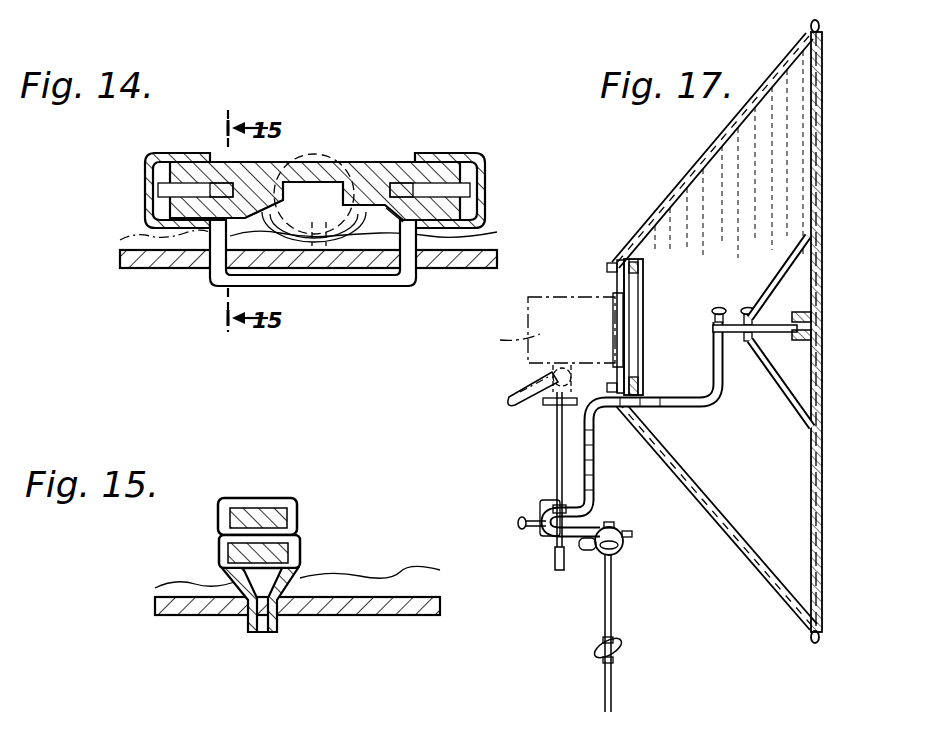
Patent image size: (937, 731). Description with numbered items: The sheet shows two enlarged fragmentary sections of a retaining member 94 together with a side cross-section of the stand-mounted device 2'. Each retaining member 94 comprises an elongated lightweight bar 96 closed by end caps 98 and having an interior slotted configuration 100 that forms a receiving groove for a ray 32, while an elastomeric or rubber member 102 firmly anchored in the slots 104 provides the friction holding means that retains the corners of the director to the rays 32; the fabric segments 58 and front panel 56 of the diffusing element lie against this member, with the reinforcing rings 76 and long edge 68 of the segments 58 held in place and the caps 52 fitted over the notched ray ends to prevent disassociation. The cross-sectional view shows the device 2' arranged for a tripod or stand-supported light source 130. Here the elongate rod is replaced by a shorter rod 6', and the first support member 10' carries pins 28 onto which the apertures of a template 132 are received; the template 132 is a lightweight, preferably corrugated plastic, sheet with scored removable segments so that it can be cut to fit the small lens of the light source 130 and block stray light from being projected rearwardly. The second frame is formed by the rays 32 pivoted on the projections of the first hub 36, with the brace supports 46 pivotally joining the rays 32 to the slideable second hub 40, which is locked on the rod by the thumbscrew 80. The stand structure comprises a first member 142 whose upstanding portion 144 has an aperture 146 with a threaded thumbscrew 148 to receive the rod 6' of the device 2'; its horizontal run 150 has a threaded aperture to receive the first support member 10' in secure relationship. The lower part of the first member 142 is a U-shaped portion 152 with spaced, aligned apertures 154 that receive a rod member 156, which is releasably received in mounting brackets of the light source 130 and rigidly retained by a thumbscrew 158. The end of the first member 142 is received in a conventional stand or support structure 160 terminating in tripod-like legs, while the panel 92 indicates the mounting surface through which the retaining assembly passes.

In FIG. 17, the device 2' is at (850, 102).
In FIG. 17, the shorter rod 6' is at (842, 311).
In FIG. 17, the first support member 10' is at (675, 273).
In FIG. 17, the pins 28 is at (612, 265).
In FIG. 14, the rays 32 is at (334, 262).
In FIG. 17, the rays 32 is at (815, 358).
In FIG. 17, the first hub 36 is at (811, 327).
In FIG. 17, the second hub 40 is at (756, 322).
In FIG. 17, the brace supports 46 is at (812, 393).
In FIG. 14, the grommets or covers 52 is at (322, 158).
In FIG. 17, the grommets or covers 52 is at (820, 28).
In FIG. 17, the front panel 56 is at (822, 452).
In FIG. 14, the conformable segments 58 is at (498, 236).
In FIG. 15, the conformable segments 58 is at (365, 582).
In FIG. 17, the conformable segments 58 is at (700, 152).
In FIG. 17, the long edge 68 is at (793, 58).
In FIG. 14, the reinforcing rings 76 is at (322, 232).
In FIG. 17, the thumbscrew 80 is at (756, 315).
In FIG. 14, the panel 92 is at (136, 269).
In FIG. 15, the panel 92 is at (210, 615).
In FIG. 14, the retaining members 94 is at (389, 158).
In FIG. 14, the bar 96 is at (410, 228).
In FIG. 15, the bar 96 is at (300, 520).
In FIG. 14, the end caps 98 is at (192, 154).
In FIG. 15, the end caps 98 is at (283, 497).
In FIG. 14, the interior slotted configuration 100 is at (212, 283).
In FIG. 14, the elastomeric or rubber member 102 is at (304, 224).
In FIG. 15, the elastomeric or rubber member 102 is at (222, 540).
In FIG. 14, the slots 104 is at (215, 190).
In FIG. 15, the slots 104 is at (262, 497).
In FIG. 17, the light source 130 is at (527, 334).
In FIG. 17, the template 132 is at (622, 282).
In FIG. 17, the first member 142 is at (600, 472).
In FIG. 17, the upstanding portion 144 is at (728, 380).
In FIG. 17, the aperture 146 is at (712, 327).
In FIG. 17, the threaded thumbscrew 148 is at (722, 306).
In FIG. 17, the horizontal run 150 is at (658, 398).
In FIG. 17, the U-shaped portion 152 is at (548, 540).
In FIG. 17, the apertures 154 is at (556, 510).
In FIG. 17, the rod member 156 is at (556, 440).
In FIG. 17, the thumbscrew 158 is at (518, 527).
In FIG. 17, the stand or support structure 160 is at (618, 614).